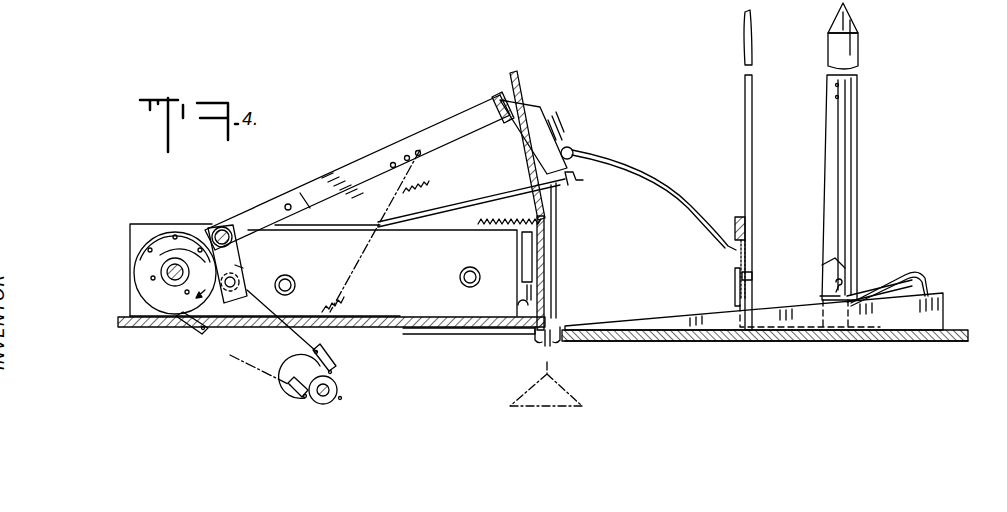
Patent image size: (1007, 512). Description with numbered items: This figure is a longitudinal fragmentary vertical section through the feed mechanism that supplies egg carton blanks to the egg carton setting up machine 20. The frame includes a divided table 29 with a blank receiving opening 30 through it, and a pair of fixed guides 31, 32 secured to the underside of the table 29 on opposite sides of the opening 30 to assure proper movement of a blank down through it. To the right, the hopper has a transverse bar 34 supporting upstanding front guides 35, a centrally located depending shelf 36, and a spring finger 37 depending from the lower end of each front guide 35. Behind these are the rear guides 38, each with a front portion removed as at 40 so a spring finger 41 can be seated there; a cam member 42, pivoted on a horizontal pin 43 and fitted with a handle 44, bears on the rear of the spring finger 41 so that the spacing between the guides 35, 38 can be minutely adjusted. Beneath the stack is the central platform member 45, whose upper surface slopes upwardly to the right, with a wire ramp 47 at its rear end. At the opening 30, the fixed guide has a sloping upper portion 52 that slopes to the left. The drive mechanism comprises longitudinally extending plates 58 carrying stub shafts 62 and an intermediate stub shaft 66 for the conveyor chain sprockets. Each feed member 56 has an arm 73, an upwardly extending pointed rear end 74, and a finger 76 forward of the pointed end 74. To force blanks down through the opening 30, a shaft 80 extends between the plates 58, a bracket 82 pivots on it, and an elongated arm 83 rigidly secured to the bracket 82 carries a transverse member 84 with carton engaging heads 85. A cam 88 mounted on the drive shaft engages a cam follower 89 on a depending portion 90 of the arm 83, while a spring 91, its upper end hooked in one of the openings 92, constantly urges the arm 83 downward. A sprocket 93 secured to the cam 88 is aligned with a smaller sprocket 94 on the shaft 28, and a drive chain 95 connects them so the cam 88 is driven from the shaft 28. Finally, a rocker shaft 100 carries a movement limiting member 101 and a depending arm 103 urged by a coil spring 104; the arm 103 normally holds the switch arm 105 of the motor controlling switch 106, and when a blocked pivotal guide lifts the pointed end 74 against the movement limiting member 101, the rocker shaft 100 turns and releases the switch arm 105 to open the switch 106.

The egg carton setting up machine 20 is at (568, 393).
The shaft 28 is at (338, 392).
The divided table 29 is at (130, 328).
The blank receiving opening 30 is at (541, 344).
The fixed guide 31 is at (488, 338).
The fixed guide 32 is at (590, 333).
The transverse bar 34 is at (732, 215).
The front guide 35 is at (762, 72).
The depending shelf 36 is at (752, 272).
The spring finger 37 is at (733, 298).
The rear guide 38 is at (857, 86).
The removed front portion 40 is at (835, 258).
The spring finger 41 is at (822, 215).
The cam member 42 is at (828, 280).
The horizontal pin 43 is at (830, 298).
The handle 44 is at (862, 288).
The central platform member 45 is at (940, 305).
The wire ramp 47 is at (918, 274).
The sloping upper portion 52 is at (520, 85).
The feed member 56 is at (489, 192).
The longitudinally extending plate 58 is at (143, 226).
The stub shaft 62 is at (458, 275).
The intermediate stub shaft 66 is at (295, 281).
The arm 73 is at (438, 202).
The pointed rear end 74 is at (578, 180).
The finger 76 is at (412, 206).
The shaft 80 is at (224, 226).
The bracket 82 is at (270, 205).
The elongated arm 83 is at (358, 170).
The transverse member 84 is at (495, 106).
The carton engaging head 85 is at (552, 115).
The cam 88 is at (148, 282).
The cam follower 89 is at (262, 262).
The depending portion 90 is at (248, 262).
The spring 91 is at (344, 300).
The openings 92 is at (418, 150).
The sprocket 93 is at (175, 240).
The sprocket 94 is at (338, 382).
The drive chain 95 is at (200, 338).
The rocker shaft 100 is at (572, 148).
The movement limiting member 101 is at (655, 140).
The depending arm 103 is at (560, 211).
The coil spring 104 is at (521, 220).
The switch arm 105 is at (530, 290).
The motor controlling switch 106 is at (520, 244).